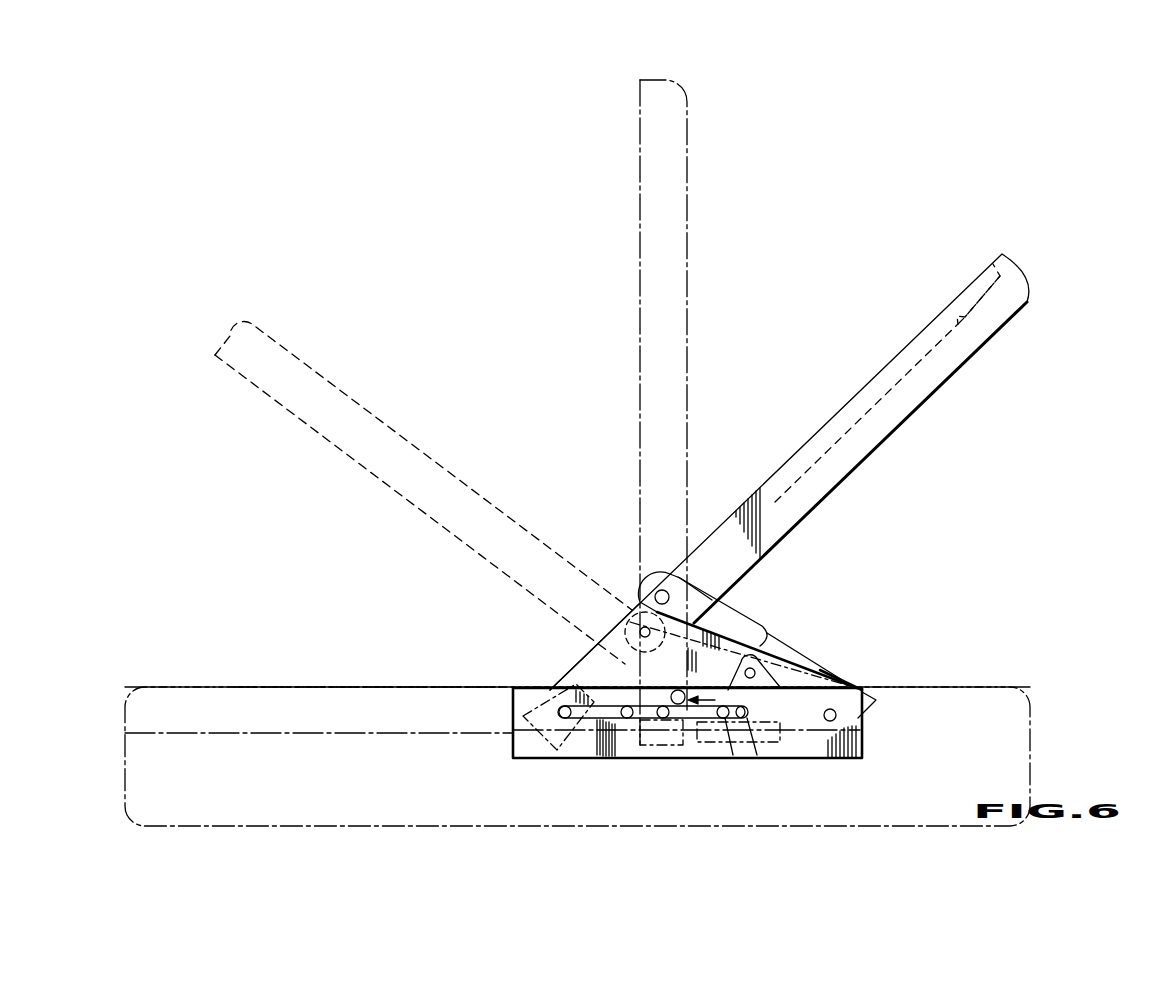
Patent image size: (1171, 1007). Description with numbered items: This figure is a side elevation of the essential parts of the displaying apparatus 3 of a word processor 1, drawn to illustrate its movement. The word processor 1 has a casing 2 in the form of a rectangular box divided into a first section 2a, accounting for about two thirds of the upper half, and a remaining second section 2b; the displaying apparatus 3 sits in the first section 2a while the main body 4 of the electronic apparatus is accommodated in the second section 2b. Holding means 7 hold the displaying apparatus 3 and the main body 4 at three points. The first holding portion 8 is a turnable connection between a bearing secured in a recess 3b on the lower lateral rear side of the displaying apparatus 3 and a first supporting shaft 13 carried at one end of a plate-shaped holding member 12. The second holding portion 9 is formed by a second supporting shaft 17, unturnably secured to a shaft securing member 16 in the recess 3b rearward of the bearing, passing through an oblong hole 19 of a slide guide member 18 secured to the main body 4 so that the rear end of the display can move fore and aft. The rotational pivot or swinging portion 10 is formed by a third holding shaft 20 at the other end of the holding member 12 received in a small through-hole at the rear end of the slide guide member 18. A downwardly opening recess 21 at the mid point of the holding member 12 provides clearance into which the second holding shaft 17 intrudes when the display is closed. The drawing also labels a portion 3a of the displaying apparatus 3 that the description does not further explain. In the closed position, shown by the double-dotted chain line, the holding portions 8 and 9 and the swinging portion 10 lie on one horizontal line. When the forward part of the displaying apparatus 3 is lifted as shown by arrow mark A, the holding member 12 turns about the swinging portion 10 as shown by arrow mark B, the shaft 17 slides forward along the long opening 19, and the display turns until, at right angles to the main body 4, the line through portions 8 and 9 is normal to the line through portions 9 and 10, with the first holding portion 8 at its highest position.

The word processor 1 is at (318, 268).
The casing 2 is at (180, 612).
The first section 2a is at (228, 687).
The second section 2b is at (190, 733).
The displaying apparatus 3 is at (640, 158).
The arm notch 3a is at (938, 342).
The recess 3b is at (630, 673).
The main body 4 is at (125, 770).
The holding means 7 is at (828, 548).
The first holding portion 8 is at (627, 607).
The second holding portion 9 is at (574, 745).
The rotational pivot portion 10 is at (850, 690).
The holding member 12 is at (738, 608).
The first supporting shaft 13 is at (640, 597).
The shaft securing member 16 is at (525, 700).
The second supporting shaft 17 is at (560, 720).
The slide guide member 18 is at (600, 745).
The oblong hole 19 is at (700, 745).
The third holding shaft 20 is at (850, 728).
The downwardly opening recess 21 is at (750, 735).
The arrow mark A is at (98, 672).
The arrow mark B is at (796, 738).